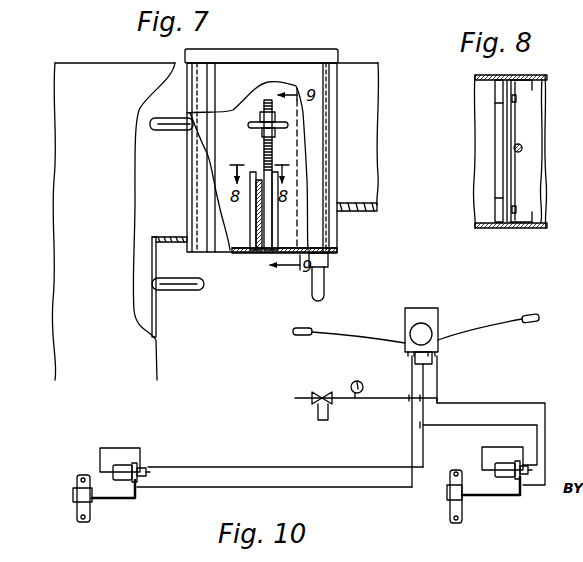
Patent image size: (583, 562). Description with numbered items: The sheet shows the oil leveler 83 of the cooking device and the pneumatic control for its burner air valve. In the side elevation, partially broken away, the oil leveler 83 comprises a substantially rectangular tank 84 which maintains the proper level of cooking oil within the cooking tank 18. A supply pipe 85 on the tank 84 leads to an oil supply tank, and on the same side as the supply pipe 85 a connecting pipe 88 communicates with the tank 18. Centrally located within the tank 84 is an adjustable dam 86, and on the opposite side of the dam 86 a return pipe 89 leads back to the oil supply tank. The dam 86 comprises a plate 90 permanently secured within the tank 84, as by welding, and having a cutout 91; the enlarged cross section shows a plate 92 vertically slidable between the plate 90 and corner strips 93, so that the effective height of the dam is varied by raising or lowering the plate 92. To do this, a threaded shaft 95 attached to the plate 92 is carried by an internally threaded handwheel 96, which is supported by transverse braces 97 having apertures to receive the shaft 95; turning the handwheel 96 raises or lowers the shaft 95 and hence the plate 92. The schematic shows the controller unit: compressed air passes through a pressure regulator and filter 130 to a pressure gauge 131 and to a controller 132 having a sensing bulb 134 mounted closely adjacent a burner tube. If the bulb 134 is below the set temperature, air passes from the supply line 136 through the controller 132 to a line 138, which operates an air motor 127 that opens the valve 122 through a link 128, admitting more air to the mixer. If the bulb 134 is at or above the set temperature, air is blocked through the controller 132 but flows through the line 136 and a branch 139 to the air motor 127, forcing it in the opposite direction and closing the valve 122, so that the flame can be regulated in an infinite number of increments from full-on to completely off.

In FIG. 7, the tank 18 is at (142, 70).
In FIG. 7, the oil leveler 83 is at (336, 54).
In FIG. 7, the rectangular tank 84 is at (333, 222).
In FIG. 8, the rectangular tank 84 is at (524, 76).
In FIG. 7, the supply pipe 85 is at (171, 119).
In FIG. 7, the adjustable dam 86 is at (258, 246).
In FIG. 8, the adjustable dam 86 is at (530, 188).
In FIG. 7, the connecting pipe 88 is at (171, 288).
In FIG. 7, the return pipe 89 is at (327, 286).
In FIG. 7, the plate 90 is at (258, 206).
In FIG. 8, the plate 90 is at (495, 95).
In FIG. 7, the cutout 91 is at (253, 176).
In FIG. 8, the cutout 91 is at (500, 124).
In FIG. 8, the plate 92 is at (515, 136).
In FIG. 8, the corner strips 93 is at (533, 88).
In FIG. 7, the threaded shaft 95 is at (273, 154).
In FIG. 8, the threaded shaft 95 is at (522, 149).
In FIG. 7, the handwheel 96 is at (287, 125).
In FIG. 7, the transverse braces 97 is at (258, 122).
In FIG. 10, the valve 122 is at (77, 480).
In FIG. 10, the air motor 127 is at (138, 466).
In FIG. 10, the link 128 is at (112, 500).
In FIG. 10, the pressure regulator and filter 130 is at (318, 396).
In FIG. 10, the pressure gauge 131 is at (356, 383).
In FIG. 10, the controller 132 is at (438, 318).
In FIG. 10, the sensing bulb 134 is at (303, 336).
In FIG. 10, the supply line 136 is at (398, 403).
In FIG. 10, the line 138 is at (360, 490).
In FIG. 10, the branch 139 is at (120, 452).